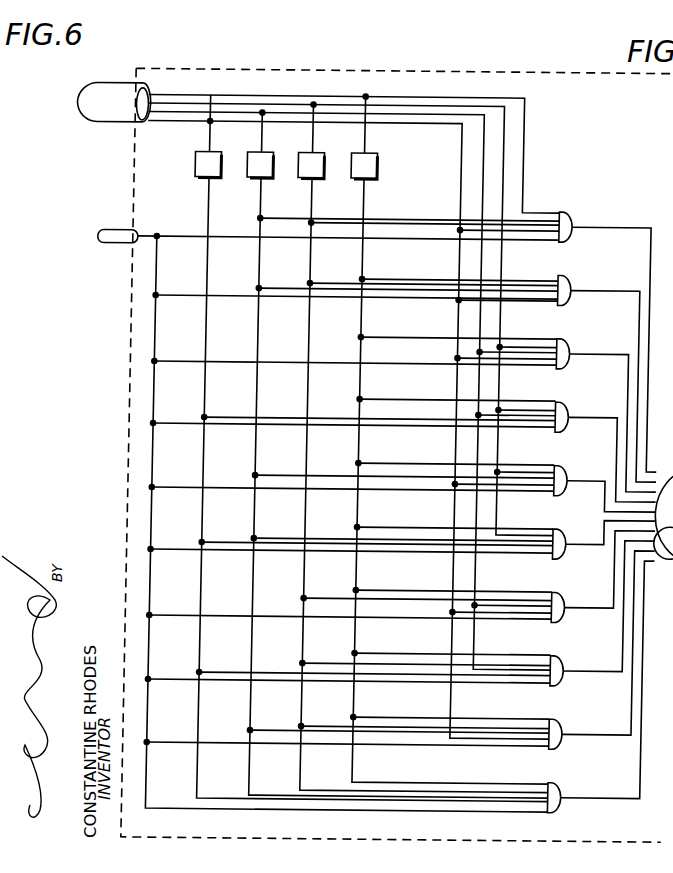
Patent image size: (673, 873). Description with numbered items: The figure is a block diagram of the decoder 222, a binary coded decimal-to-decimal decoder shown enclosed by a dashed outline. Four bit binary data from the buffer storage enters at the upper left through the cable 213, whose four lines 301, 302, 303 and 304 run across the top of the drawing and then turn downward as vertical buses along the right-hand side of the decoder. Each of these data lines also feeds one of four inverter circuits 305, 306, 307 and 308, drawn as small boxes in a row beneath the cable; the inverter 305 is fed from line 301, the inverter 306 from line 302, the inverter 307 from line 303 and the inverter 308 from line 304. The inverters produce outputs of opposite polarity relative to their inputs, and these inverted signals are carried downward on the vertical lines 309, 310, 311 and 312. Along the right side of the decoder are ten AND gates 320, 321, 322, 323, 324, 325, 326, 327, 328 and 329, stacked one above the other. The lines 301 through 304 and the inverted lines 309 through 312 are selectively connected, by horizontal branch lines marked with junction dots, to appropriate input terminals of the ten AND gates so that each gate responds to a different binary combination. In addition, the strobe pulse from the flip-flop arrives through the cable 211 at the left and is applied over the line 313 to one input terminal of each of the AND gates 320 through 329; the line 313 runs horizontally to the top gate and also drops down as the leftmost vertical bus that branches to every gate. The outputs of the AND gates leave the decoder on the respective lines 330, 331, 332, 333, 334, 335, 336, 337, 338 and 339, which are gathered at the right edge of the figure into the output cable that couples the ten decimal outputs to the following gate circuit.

The cable 211 is at (108, 246).
The cable 213 is at (108, 126).
The decoder 222 is at (133, 187).
The line 301 is at (460, 151).
The line 302 is at (482, 163).
The line 303 is at (502, 155).
The line 304 is at (522, 174).
The inverter circuit 305 is at (206, 150).
The inverter circuit 306 is at (258, 150).
The inverter circuit 307 is at (310, 150).
The inverter circuit 308 is at (362, 150).
The line 309 is at (206, 191).
The line 310 is at (258, 191).
The line 311 is at (309, 191).
The line 312 is at (361, 191).
The line 313 is at (200, 237).
The AND gate 320 is at (567, 242).
The AND gate 321 is at (568, 305).
The AND gate 322 is at (569, 368).
The AND gate 323 is at (570, 431).
The AND gate 324 is at (567, 495).
The AND gate 325 is at (568, 558).
The AND gate 326 is at (566, 621).
The AND gate 327 is at (567, 685).
The AND gate 328 is at (567, 748).
The AND gate 329 is at (568, 812).
The line 330 is at (600, 226).
The line 331 is at (596, 288).
The line 332 is at (588, 352).
The line 333 is at (580, 415).
The line 334 is at (575, 478).
The line 335 is at (571, 542).
The line 336 is at (576, 606).
The line 337 is at (580, 669).
The line 338 is at (581, 732).
The line 339 is at (587, 795).